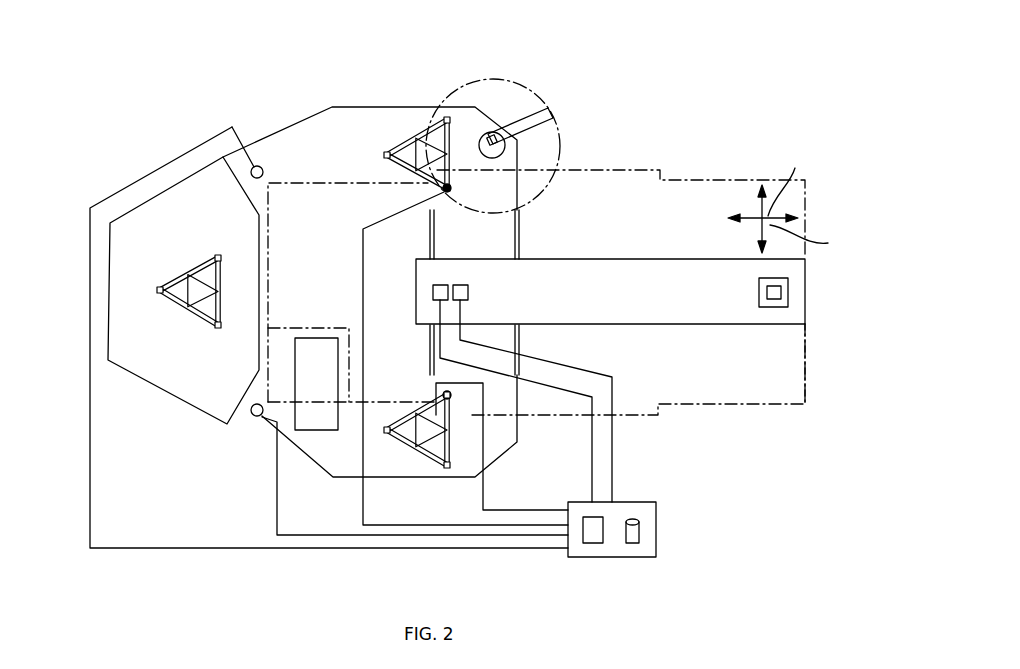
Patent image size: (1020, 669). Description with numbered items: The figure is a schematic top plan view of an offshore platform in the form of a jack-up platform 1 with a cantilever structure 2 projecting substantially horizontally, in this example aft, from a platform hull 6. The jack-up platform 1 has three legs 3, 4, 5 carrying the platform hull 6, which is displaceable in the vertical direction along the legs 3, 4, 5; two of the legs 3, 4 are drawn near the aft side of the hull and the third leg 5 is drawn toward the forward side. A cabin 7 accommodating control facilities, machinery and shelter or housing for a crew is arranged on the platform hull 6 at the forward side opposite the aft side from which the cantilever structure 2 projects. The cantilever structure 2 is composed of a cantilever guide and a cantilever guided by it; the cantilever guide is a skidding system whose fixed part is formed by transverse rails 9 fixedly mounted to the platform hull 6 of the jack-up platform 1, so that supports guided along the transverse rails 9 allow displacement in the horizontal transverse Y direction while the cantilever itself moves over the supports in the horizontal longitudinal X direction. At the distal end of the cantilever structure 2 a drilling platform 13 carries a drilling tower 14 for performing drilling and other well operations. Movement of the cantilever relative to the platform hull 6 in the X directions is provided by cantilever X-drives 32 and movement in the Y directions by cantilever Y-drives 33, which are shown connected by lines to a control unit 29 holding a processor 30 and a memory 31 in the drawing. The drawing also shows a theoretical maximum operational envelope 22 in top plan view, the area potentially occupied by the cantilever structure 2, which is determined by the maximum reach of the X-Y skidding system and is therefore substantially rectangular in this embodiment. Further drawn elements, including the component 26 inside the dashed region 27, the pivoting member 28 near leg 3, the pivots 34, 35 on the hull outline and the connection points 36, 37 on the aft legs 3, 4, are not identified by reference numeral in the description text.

The jack-up platform 1 is at (470, 331).
The cantilever structure 2 is at (681, 205).
The leg 3 is at (402, 150).
The leg 4 is at (430, 462).
The leg 5 is at (180, 283).
The platform hull 6 is at (262, 445).
The cabin 7 is at (141, 366).
The transverse rails 9 is at (436, 237).
The drilling platform 13 is at (774, 308).
The drilling tower 14 is at (782, 292).
The theoretical maximum operational envelope 22 is at (750, 407).
The drive motor 26 is at (318, 431).
The drive unit 27 is at (307, 326).
The pivot arm 28 is at (540, 118).
The control unit 29 is at (657, 528).
The processor 30 is at (597, 544).
The memory 31 is at (632, 544).
The cantilever X-drives 32 is at (432, 292).
The cantilever Y-drives 33 is at (470, 292).
The first hinge 34 is at (264, 170).
The second hinge 35 is at (254, 418).
The first pivot point 36 is at (440, 190).
The second pivot point 37 is at (440, 393).